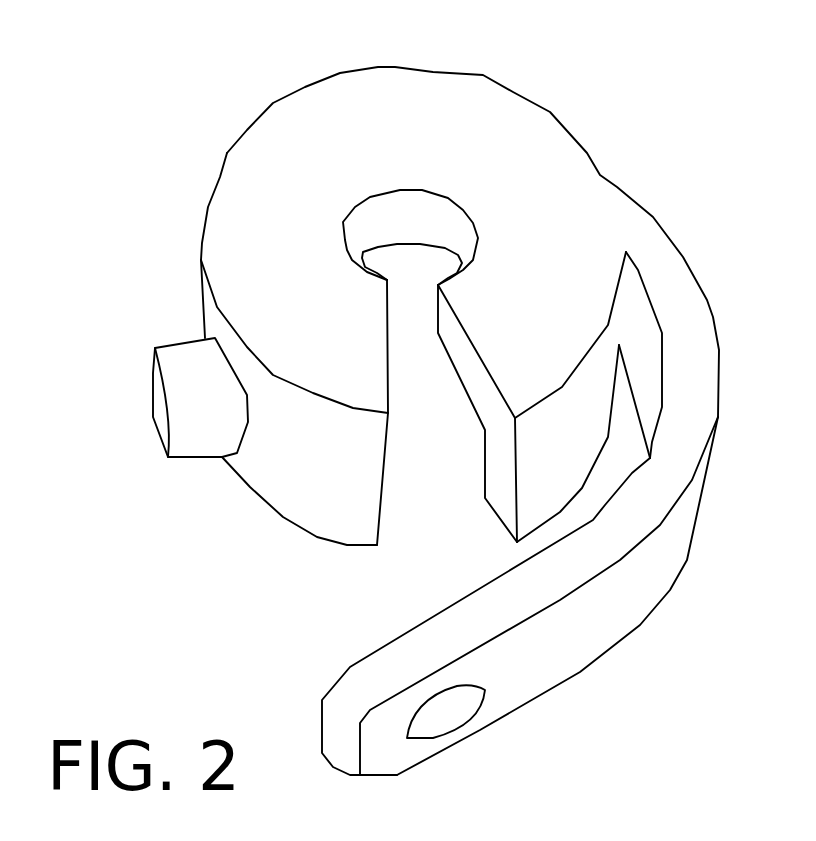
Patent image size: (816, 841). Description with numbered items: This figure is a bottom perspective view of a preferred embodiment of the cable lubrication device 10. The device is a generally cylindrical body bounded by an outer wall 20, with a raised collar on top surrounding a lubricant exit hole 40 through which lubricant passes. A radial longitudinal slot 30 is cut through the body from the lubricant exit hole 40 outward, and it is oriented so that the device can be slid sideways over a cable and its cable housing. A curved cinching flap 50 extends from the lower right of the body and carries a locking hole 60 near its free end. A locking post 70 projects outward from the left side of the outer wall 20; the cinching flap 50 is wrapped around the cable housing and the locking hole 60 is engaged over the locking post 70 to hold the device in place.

The cable lubrication device 10 is at (227, 153).
The outer wall 20 is at (295, 462).
The radial longitudinal slot 30 is at (423, 495).
The lubricant exit hole 40 is at (460, 207).
The cinching flap 50 is at (618, 595).
The locking hole 60 is at (482, 713).
The locking post 70 is at (183, 340).